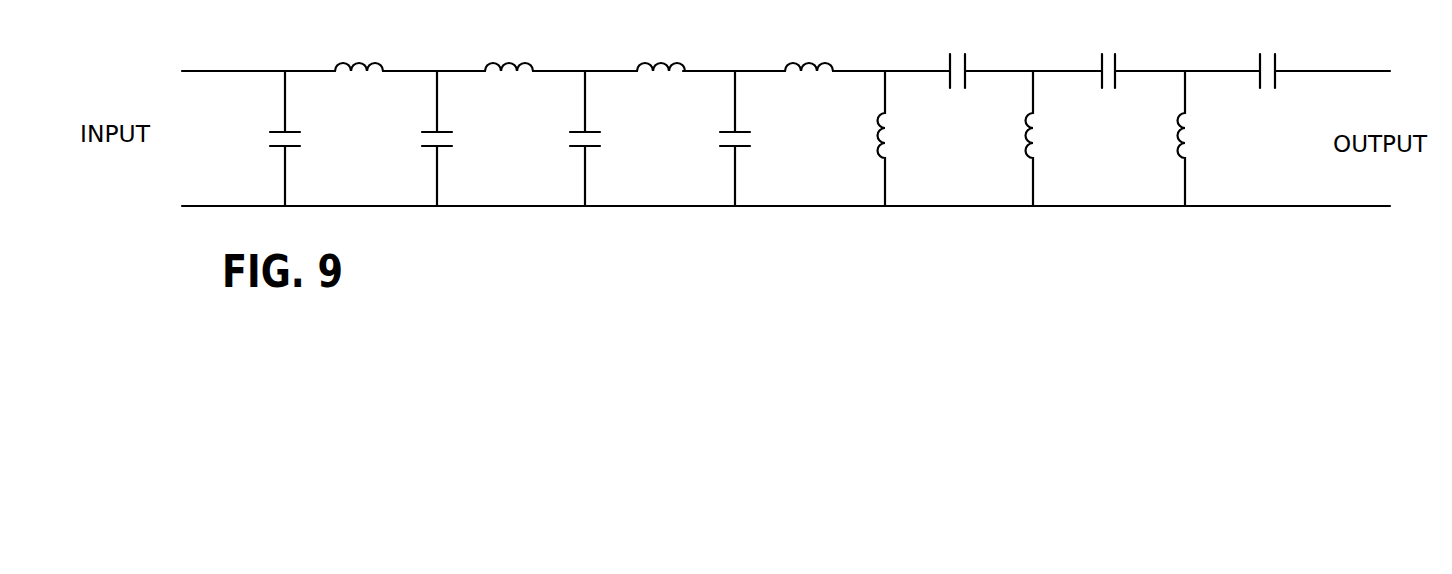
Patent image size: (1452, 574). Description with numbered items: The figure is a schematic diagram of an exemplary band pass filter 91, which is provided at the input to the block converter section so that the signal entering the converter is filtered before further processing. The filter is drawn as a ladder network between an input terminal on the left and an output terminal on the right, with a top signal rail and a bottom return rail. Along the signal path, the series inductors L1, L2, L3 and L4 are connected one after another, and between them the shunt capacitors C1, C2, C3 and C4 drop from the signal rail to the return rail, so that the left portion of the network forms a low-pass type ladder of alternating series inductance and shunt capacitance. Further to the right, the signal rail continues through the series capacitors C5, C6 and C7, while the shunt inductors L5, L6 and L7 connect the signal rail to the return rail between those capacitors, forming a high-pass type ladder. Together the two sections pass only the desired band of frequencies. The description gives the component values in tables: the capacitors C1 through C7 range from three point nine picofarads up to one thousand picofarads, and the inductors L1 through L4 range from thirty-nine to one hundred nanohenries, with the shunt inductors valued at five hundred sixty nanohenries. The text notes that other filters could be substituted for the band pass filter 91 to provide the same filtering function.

The band pass filter 91 is at (998, 257).
The capacitor C1 is at (279, 134).
The capacitor C2 is at (431, 133).
The capacitor C3 is at (580, 132).
The capacitor C4 is at (742, 131).
The capacitor C5 is at (967, 75).
The capacitor C6 is at (1117, 75).
The capacitor C7 is at (1277, 78).
The inductor L1 is at (383, 62).
The inductor L2 is at (513, 60).
The inductor L3 is at (655, 60).
The inductor L4 is at (805, 60).
The inductor L5 is at (876, 152).
The inductor L6 is at (1024, 153).
The inductor L7 is at (1176, 153).